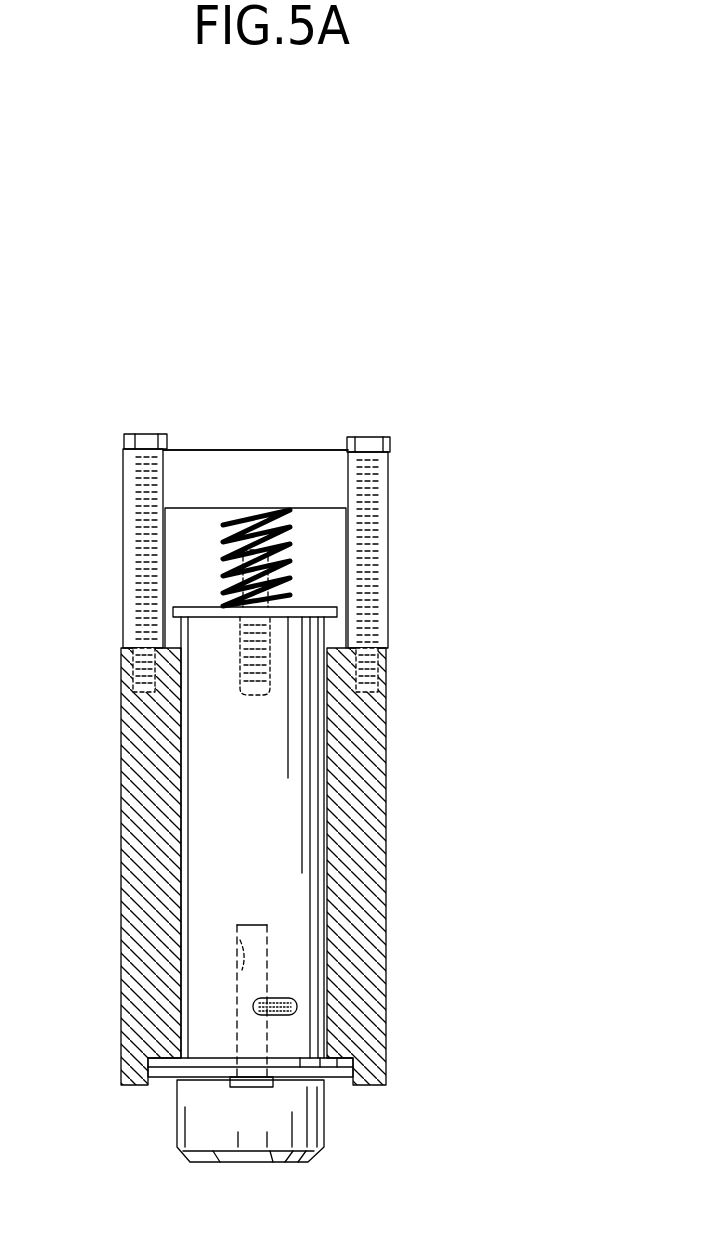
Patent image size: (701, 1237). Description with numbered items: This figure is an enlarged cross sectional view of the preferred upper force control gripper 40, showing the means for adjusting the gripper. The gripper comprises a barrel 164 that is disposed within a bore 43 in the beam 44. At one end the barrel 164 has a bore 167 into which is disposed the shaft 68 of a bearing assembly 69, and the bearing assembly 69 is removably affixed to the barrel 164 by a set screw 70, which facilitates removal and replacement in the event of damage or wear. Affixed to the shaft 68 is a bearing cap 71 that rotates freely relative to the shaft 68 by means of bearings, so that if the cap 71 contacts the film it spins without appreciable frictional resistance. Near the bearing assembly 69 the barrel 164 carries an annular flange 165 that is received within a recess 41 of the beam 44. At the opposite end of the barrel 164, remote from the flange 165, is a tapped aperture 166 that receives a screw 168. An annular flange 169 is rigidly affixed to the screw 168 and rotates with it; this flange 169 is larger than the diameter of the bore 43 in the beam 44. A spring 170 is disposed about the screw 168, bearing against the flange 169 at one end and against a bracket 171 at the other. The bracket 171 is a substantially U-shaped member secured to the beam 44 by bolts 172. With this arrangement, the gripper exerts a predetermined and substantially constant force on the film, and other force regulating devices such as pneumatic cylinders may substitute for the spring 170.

The upper force control gripper 40 is at (430, 590).
The recess 41 is at (333, 1057).
The bore 43 is at (325, 795).
The beam 44 is at (385, 860).
The shaft 68 is at (253, 927).
The bearing assembly 69 is at (329, 1169).
The set screw 70 is at (290, 998).
The bearing cap 71 is at (238, 1132).
The barrel 164 is at (268, 824).
The annular flange 165 is at (162, 1078).
The tapped aperture 166 is at (243, 695).
The bore 167 is at (240, 940).
The screw 168 is at (273, 593).
The annular flange 169 is at (177, 605).
The spring 170 is at (222, 555).
The bracket 171 is at (207, 473).
The bolts 172 is at (147, 434).